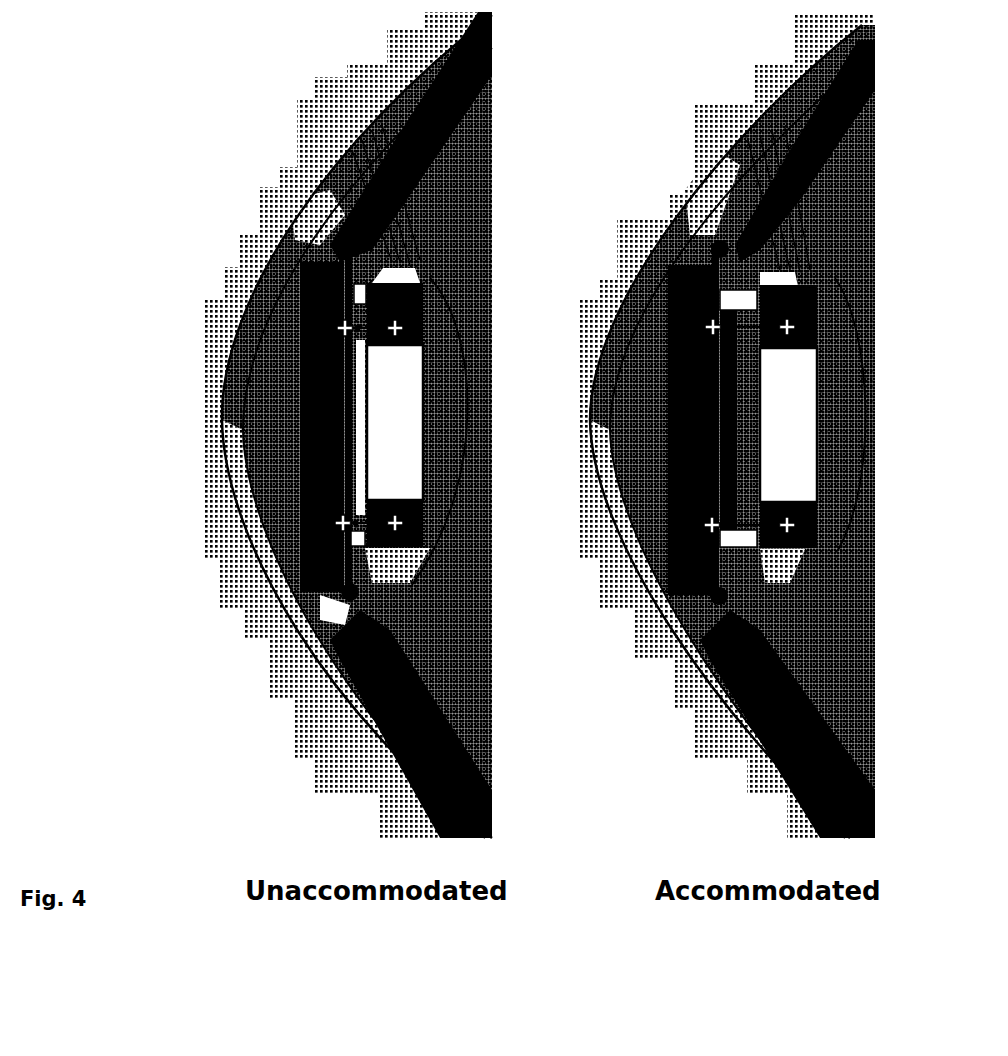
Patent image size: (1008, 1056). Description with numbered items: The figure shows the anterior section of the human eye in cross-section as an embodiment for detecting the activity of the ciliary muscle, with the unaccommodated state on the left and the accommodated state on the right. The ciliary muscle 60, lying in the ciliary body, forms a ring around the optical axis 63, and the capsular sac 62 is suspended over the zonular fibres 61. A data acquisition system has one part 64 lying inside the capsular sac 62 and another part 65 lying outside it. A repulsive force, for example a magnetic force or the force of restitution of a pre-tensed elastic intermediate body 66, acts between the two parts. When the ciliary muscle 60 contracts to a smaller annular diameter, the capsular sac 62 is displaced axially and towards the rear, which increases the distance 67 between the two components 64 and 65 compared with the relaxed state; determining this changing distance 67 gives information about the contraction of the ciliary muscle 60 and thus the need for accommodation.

The ciliary muscle 60 is at (352, 200).
The zonular fibres 61 is at (397, 240).
The capsular sac 62 is at (437, 305).
The optical axis 63 is at (526, 426).
The part of the data acquisition system lying in the capsular sac 64 is at (420, 547).
The part of the data acquisition system lying outside the capsular sac 65 is at (360, 600).
The pre-tensed elastic intermediate body 66 is at (360, 543).
The distance 67 is at (375, 325).